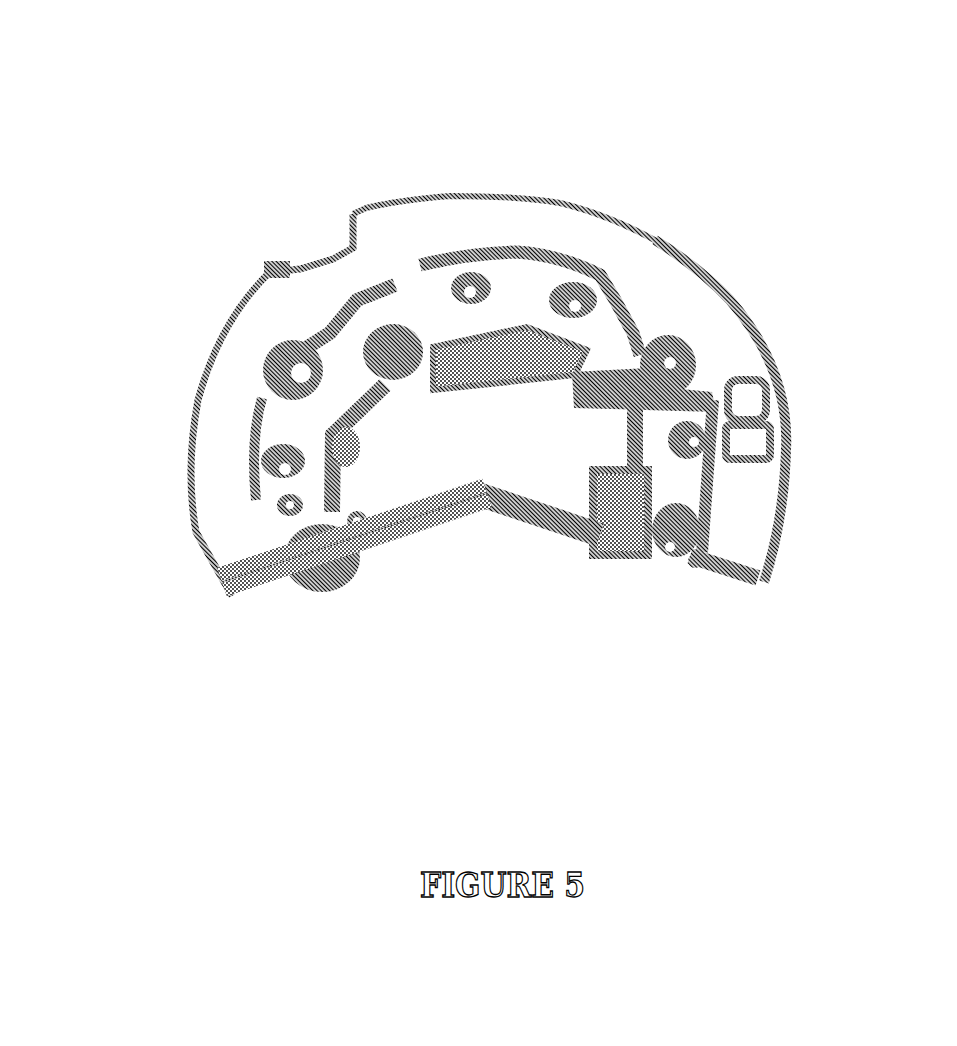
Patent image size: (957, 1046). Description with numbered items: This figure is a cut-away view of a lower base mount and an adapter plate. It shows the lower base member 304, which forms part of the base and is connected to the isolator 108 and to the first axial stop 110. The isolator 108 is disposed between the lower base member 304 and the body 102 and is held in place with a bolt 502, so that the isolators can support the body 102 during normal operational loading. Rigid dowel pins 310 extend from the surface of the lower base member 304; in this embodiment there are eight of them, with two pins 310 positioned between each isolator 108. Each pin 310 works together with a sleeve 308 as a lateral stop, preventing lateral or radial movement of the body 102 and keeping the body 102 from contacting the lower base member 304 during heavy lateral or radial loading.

The body 102 is at (423, 495).
The isolator 108 is at (652, 366).
The first axial stop 110 is at (665, 580).
The lower base member 304 is at (733, 343).
The sleeve 308 is at (565, 288).
The pin 310 is at (470, 291).
The bolt 502 is at (292, 582).